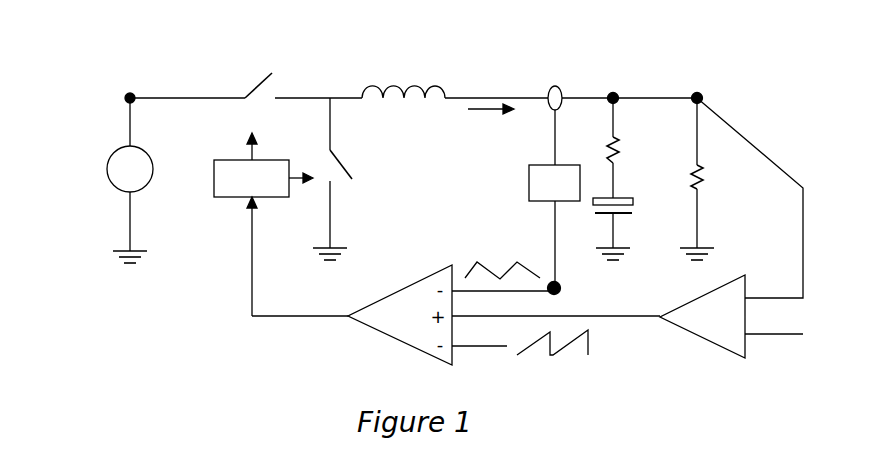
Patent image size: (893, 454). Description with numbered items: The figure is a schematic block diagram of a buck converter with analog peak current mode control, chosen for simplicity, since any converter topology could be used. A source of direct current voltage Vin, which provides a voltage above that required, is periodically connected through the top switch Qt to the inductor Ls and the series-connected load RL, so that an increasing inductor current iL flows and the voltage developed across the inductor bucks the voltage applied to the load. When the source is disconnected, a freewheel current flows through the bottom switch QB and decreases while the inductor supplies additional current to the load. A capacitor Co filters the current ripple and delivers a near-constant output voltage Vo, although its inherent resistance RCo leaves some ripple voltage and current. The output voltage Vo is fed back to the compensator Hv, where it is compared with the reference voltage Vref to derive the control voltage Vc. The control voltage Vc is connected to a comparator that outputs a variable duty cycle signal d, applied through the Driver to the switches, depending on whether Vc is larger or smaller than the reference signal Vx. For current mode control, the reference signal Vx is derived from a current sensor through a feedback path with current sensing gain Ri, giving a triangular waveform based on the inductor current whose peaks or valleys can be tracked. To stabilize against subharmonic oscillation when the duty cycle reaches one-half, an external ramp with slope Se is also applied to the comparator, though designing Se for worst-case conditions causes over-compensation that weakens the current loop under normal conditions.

The top switch Qt is at (244, 97).
The bottom switch QB is at (333, 150).
The inductor Ls is at (403, 108).
The inductor current iL is at (491, 91).
The current sensing gain Ri is at (554, 186).
The output voltage Vo is at (612, 81).
The inherent resistance of the capacitor RCo is at (633, 148).
The capacitor Co is at (628, 221).
The load RL is at (706, 177).
The compensator Hv is at (731, 228).
The reference voltage Vref is at (780, 353).
The control voltage Vc is at (556, 302).
The reference signal Vx is at (521, 280).
The external ramp slope Se is at (537, 349).
The source of direct current voltage Vin is at (109, 180).
The driver Driver is at (263, 165).
The variable duty cycle signal d is at (282, 256).